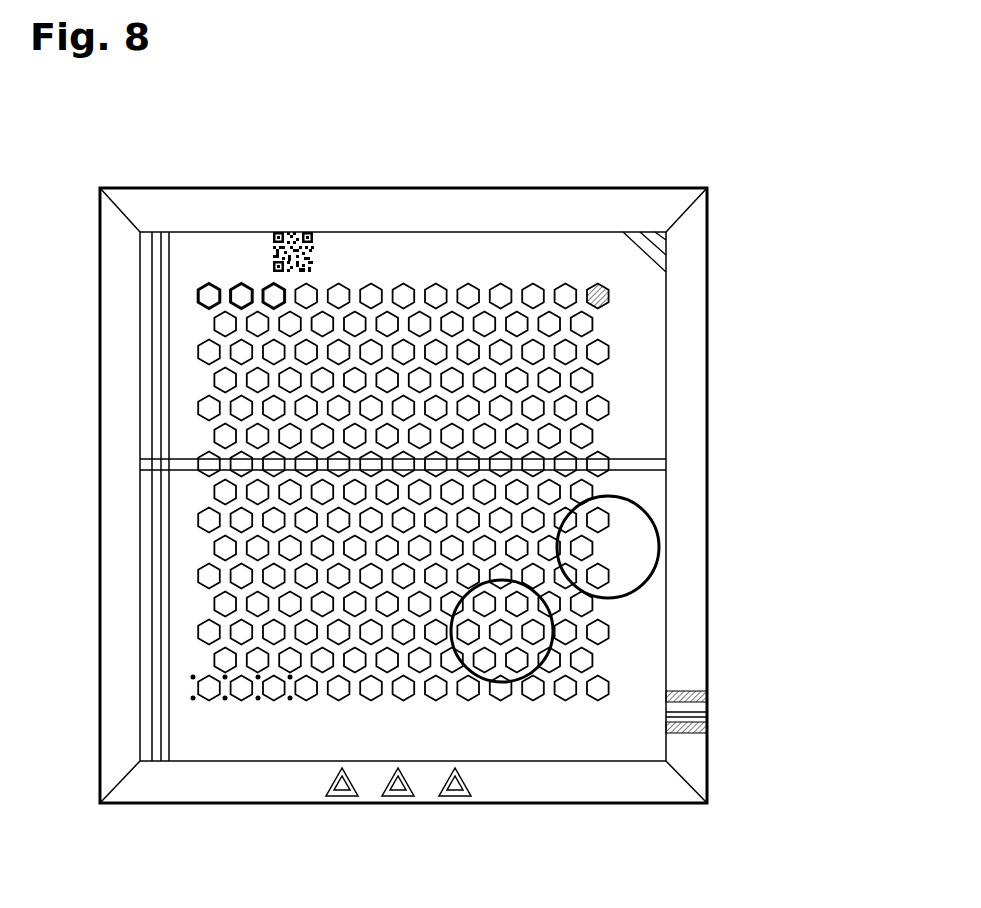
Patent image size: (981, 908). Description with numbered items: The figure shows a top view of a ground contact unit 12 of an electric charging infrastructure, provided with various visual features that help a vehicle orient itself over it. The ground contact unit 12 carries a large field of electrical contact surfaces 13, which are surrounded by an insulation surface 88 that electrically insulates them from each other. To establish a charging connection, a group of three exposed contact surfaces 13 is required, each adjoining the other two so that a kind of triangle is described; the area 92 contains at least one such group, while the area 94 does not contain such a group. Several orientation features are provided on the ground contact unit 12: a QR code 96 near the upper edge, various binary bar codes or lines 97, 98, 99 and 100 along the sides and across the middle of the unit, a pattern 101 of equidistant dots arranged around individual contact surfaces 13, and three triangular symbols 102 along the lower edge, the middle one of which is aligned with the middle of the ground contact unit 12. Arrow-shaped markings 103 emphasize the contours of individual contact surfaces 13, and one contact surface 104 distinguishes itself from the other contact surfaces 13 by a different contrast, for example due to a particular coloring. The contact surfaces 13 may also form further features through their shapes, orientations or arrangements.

The ground contact unit 12 is at (483, 181).
The contact surfaces 13 is at (404, 283).
The insulation surface 88 is at (491, 498).
The area 92 is at (553, 618).
The area 94 is at (657, 532).
The QR code 96 is at (299, 230).
The binary bar code or lines 97 is at (143, 761).
The binary bar code or lines 98 is at (700, 717).
The binary bar code or lines 99 is at (655, 449).
The corner marking 100 is at (638, 232).
The pattern of equidistant dots 101 is at (225, 702).
The triangular symbols 102 is at (398, 796).
The arrow-shaped markings 103 is at (209, 283).
The contact surface 104 is at (609, 296).